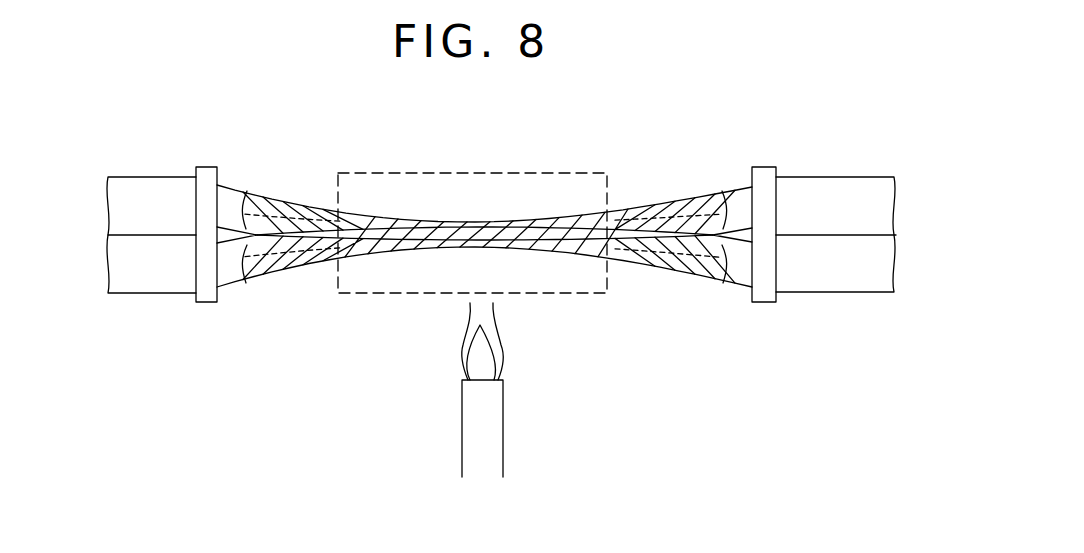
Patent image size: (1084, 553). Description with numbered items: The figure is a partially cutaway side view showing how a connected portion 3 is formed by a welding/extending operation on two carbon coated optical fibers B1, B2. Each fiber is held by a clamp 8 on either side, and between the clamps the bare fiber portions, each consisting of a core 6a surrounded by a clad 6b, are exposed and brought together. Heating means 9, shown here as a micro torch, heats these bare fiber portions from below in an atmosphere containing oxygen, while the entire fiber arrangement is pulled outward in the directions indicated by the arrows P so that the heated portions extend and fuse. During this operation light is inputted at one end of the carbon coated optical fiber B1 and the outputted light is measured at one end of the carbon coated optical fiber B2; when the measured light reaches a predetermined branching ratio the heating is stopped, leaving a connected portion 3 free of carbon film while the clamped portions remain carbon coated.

The connected portion 3 is at (429, 174).
The core 6a is at (724, 237).
The clad 6b is at (665, 204).
The clamp 8 is at (205, 305).
The heating means 9 is at (490, 400).
The carbon coated optical fiber B1 is at (170, 188).
The carbon coated optical fiber B2 is at (833, 275).
The pulling direction arrow P is at (208, 103).